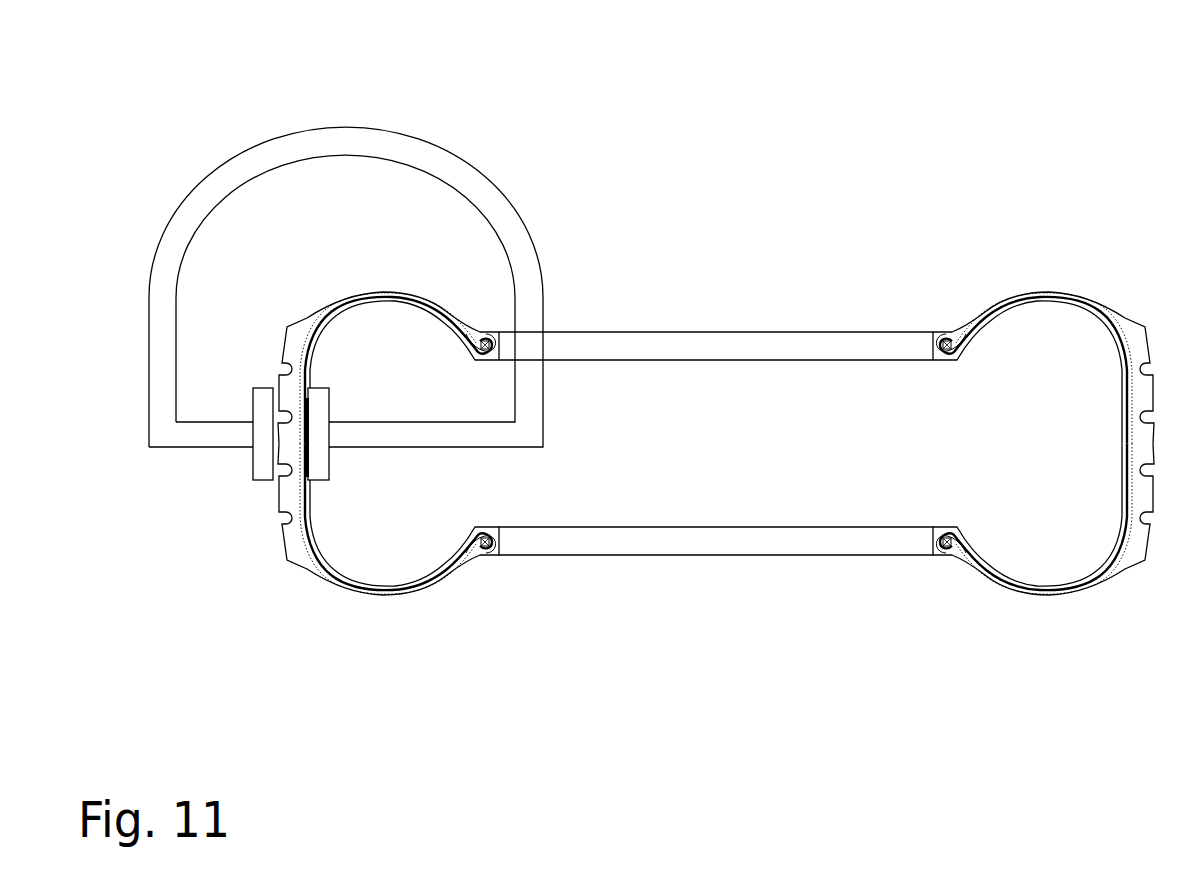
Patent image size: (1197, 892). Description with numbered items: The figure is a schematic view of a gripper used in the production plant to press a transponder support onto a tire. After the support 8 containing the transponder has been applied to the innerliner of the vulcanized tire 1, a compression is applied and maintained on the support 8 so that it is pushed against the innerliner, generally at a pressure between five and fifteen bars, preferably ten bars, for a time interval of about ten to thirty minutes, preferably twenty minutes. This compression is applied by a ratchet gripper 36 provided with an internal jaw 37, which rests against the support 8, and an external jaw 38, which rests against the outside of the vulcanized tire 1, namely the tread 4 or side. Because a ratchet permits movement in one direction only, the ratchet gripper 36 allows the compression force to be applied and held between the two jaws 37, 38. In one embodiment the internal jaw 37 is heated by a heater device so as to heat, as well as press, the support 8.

The vulcanized tire 1 is at (684, 519).
The tread 4 is at (292, 344).
The support 8 is at (313, 449).
The ratchet gripper 36 is at (495, 113).
The internal jaw 37 is at (318, 402).
The external jaw 38 is at (262, 468).